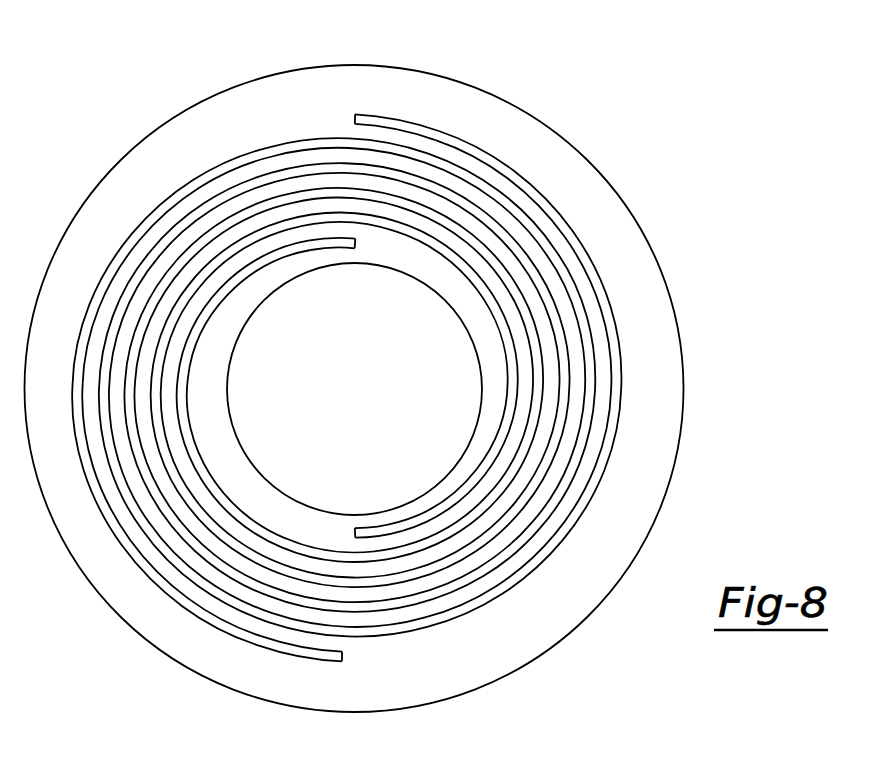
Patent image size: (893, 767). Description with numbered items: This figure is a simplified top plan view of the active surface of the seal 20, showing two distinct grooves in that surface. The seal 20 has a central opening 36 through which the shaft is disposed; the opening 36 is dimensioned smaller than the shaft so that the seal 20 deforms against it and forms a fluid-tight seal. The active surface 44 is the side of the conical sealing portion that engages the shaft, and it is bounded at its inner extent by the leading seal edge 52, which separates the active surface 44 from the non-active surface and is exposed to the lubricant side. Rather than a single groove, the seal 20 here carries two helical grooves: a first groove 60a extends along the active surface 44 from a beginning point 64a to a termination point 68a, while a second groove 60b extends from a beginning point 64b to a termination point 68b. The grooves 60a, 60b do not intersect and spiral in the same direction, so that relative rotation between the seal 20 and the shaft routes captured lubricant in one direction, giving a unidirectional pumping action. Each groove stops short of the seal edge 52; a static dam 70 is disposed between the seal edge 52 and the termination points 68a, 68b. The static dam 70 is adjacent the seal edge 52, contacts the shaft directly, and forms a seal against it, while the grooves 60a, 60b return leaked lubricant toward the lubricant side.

The seal 20 is at (654, 119).
The active surface 44 is at (664, 398).
The seal edge 52 is at (230, 397).
The central opening 36 is at (405, 381).
The static dam 70 is at (320, 266).
The first groove 60a is at (333, 429).
The second groove 60b is at (360, 332).
The beginning point 64a is at (342, 656).
The beginning point 64b is at (355, 115).
The termination point 68a is at (356, 251).
The termination point 68b is at (355, 533).